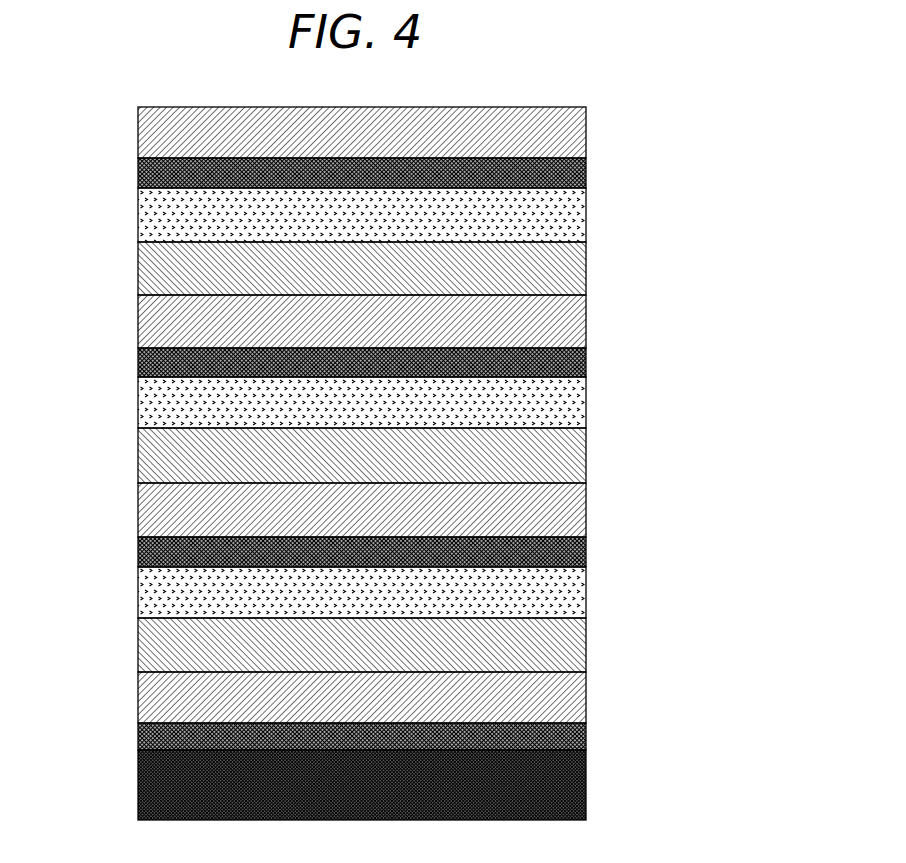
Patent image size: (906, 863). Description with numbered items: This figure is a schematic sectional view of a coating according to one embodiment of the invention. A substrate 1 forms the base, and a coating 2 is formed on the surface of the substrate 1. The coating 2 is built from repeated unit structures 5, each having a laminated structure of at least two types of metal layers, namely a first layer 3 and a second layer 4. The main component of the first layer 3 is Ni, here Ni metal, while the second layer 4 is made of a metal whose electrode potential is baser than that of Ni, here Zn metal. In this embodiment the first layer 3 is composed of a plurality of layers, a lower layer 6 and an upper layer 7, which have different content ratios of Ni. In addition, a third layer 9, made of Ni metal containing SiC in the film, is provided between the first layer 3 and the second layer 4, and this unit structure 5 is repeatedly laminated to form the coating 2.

The substrate 1 is at (137, 783).
The coating 2 is at (124, 107).
The first layer 3 is at (667, 295).
The second layer 4 is at (573, 218).
The unit structure 5 is at (720, 192).
The lower layer 6 is at (575, 363).
The upper layer 7 is at (575, 325).
The third layer 9 is at (573, 268).